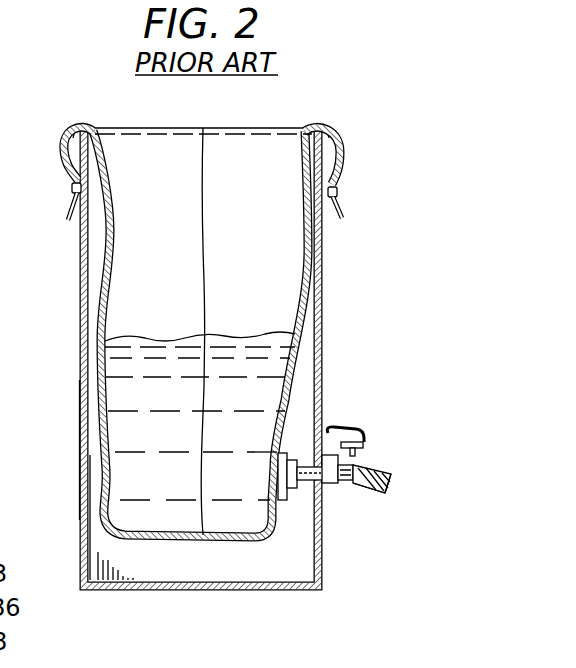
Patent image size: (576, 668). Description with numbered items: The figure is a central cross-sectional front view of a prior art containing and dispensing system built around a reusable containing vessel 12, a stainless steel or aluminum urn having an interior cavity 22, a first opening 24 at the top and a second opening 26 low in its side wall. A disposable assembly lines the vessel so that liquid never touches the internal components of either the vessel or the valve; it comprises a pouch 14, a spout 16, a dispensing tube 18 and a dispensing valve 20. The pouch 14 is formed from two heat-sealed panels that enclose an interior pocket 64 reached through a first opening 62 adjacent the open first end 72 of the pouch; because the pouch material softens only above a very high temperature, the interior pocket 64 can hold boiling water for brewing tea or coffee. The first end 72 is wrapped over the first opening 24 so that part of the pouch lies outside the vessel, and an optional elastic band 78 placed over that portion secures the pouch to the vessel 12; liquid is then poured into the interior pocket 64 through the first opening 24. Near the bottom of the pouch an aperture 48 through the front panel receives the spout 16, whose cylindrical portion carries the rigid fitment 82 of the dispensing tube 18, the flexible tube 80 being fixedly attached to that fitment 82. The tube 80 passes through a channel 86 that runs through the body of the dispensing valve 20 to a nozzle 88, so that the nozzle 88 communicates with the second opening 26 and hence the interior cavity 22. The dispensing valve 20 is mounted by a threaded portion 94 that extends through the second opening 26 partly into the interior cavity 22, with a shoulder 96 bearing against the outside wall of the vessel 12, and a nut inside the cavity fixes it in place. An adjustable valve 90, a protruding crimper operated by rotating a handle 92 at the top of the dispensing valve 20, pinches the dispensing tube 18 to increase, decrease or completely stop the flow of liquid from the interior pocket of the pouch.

The containing vessel 12 is at (76, 568).
The pouch 14 is at (203, 542).
The spout 16 is at (290, 500).
The dispensing tube 18 is at (390, 487).
The dispensing valve 20 is at (372, 464).
The interior cavity 22 is at (80, 440).
The first opening 24 is at (272, 112).
The second opening 26 is at (300, 453).
The aperture 48 is at (276, 470).
The first opening 62 is at (147, 158).
The interior pocket 64 is at (151, 278).
The first end 72 is at (338, 207).
The elastic band 78 is at (72, 189).
The tube 80 is at (374, 492).
The fitment 82 is at (305, 488).
The channel 86 is at (385, 475).
The nozzle 88 is at (393, 478).
The adjustable valve 90 is at (365, 456).
The handle 92 is at (347, 428).
The threaded portion 94 is at (300, 484).
The shoulder 96 is at (350, 486).